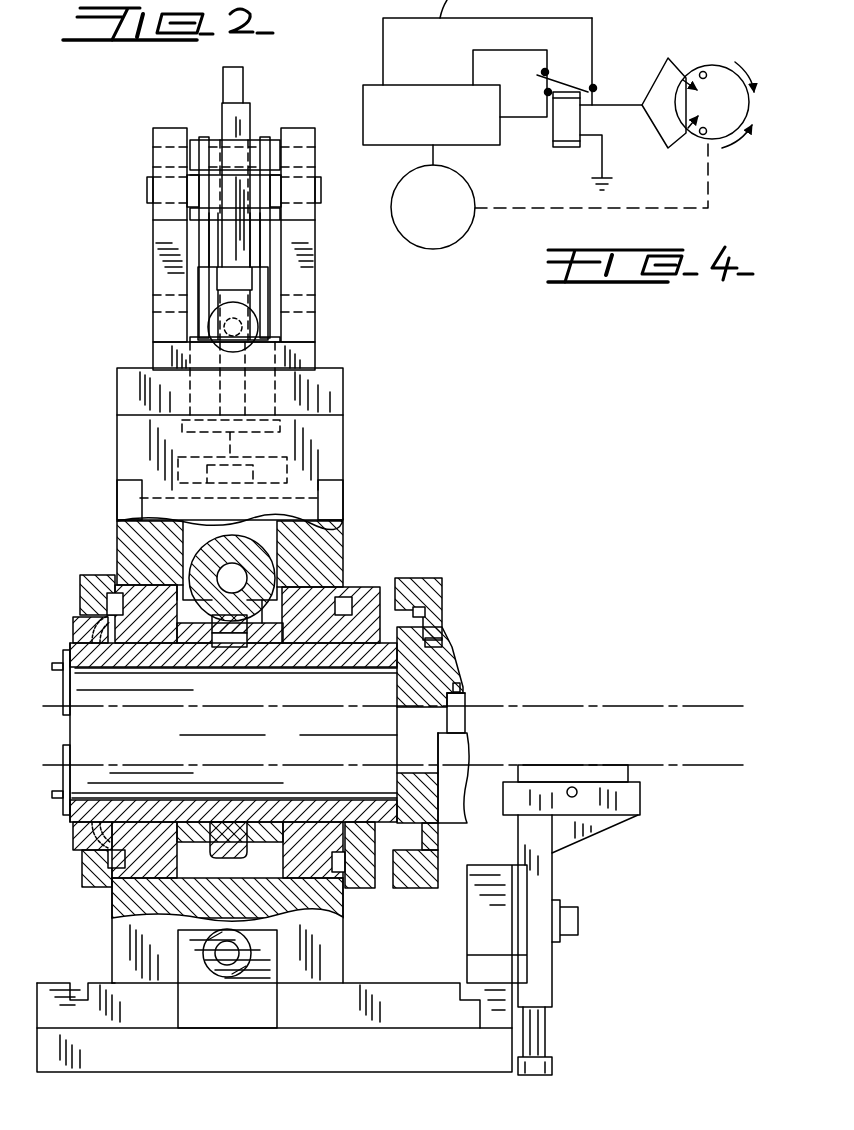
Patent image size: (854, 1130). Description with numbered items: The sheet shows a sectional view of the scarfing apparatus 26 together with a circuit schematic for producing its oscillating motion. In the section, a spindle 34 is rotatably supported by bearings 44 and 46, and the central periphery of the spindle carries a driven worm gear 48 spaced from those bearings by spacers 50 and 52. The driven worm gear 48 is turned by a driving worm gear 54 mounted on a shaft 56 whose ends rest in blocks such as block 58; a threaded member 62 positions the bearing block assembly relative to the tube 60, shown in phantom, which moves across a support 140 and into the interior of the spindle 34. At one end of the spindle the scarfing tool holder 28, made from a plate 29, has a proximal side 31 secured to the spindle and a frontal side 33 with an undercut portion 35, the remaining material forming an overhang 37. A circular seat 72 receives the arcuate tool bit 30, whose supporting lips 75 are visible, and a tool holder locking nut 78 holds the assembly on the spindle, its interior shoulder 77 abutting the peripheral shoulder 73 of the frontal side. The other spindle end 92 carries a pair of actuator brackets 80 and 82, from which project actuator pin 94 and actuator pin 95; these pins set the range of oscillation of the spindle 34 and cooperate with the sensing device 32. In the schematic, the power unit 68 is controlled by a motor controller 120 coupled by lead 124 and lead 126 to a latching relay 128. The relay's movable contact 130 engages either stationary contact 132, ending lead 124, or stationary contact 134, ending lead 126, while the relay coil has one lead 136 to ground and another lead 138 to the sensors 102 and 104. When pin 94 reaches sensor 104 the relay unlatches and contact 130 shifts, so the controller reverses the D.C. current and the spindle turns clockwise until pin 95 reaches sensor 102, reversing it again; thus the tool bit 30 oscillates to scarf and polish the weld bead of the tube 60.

In FIG. 2, the scarfing apparatus 26 is at (125, 262).
In FIG. 2, the scarfing tool holder 28 is at (468, 664).
In FIG. 2, the plate 29 is at (452, 660).
In FIG. 2, the arcuate tool bit 30 is at (468, 713).
In FIG. 2, the proximal side 31 is at (397, 780).
In FIG. 2, the sensing device 32 is at (60, 720).
In FIG. 2, the frontal side 33 is at (445, 818).
In FIG. 2, the spindle 34 is at (70, 838).
In FIG. 4, the spindle 34 is at (722, 62).
In FIG. 2, the undercut portion 35 is at (472, 740).
In FIG. 2, the overhang 37 is at (440, 745).
In FIG. 2, the bearing 44 is at (317, 607).
In FIG. 2, the bearing 46 is at (133, 603).
In FIG. 2, the driven worm gear 48 is at (243, 647).
In FIG. 2, the spacer 50 is at (198, 627).
In FIG. 2, the spacer 52 is at (262, 643).
In FIG. 2, the driving worm gear 54 is at (253, 532).
In FIG. 2, the shaft 56 is at (228, 550).
In FIG. 2, the block 58 is at (193, 533).
In FIG. 2, the tube 60 is at (692, 768).
In FIG. 2, the threaded member 62 is at (222, 88).
In FIG. 4, the power unit 68 is at (465, 237).
In FIG. 2, the seat 72 is at (461, 688).
In FIG. 2, the peripheral shoulder 73 is at (430, 644).
In FIG. 2, the supporting lips 75 is at (470, 698).
In FIG. 2, the interior shoulder 77 is at (420, 612).
In FIG. 2, the tool holder locking nut 78 is at (438, 580).
In FIG. 2, the actuator bracket 80 is at (65, 648).
In FIG. 2, the actuator bracket 82 is at (63, 812).
In FIG. 2, the spindle end 92 is at (70, 706).
In FIG. 2, the actuator pin 94 is at (53, 667).
In FIG. 4, the actuator pin 94 is at (703, 70).
In FIG. 2, the actuator pin 95 is at (53, 795).
In FIG. 4, the actuator pin 95 is at (708, 142).
In FIG. 4, the sensor 102 is at (688, 80).
In FIG. 4, the sensor 104 is at (686, 135).
In FIG. 4, the motor controller 120 is at (376, 83).
In FIG. 4, the lead 124 is at (492, 48).
In FIG. 4, the lead 126 is at (532, 117).
In FIG. 4, the latching relay 128 is at (566, 147).
In FIG. 4, the movable contact 130 is at (593, 85).
In FIG. 4, the stationary contact 132 is at (572, 40).
In FIG. 4, the stationary contact 134 is at (545, 92).
In FIG. 4, the lead 136 is at (602, 150).
In FIG. 4, the lead 138 is at (622, 105).
In FIG. 2, the support 140 is at (598, 830).